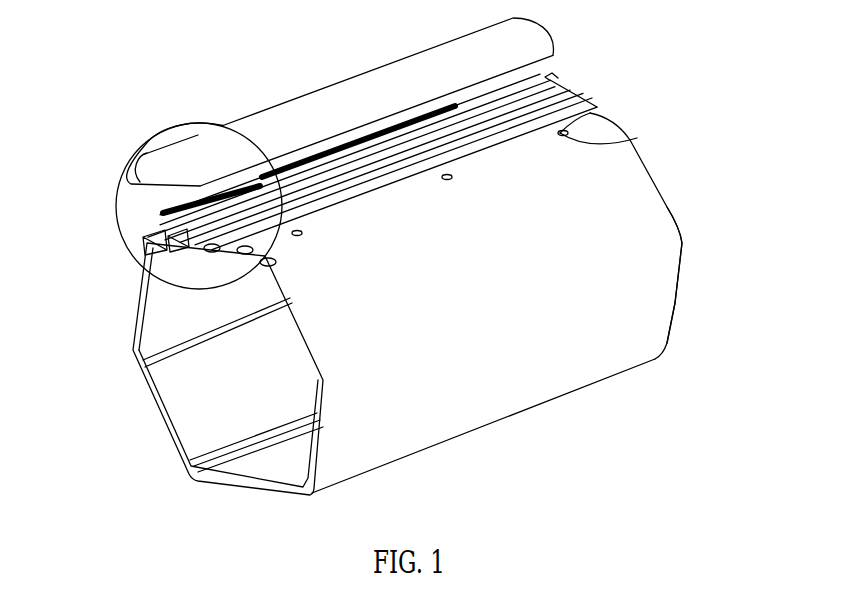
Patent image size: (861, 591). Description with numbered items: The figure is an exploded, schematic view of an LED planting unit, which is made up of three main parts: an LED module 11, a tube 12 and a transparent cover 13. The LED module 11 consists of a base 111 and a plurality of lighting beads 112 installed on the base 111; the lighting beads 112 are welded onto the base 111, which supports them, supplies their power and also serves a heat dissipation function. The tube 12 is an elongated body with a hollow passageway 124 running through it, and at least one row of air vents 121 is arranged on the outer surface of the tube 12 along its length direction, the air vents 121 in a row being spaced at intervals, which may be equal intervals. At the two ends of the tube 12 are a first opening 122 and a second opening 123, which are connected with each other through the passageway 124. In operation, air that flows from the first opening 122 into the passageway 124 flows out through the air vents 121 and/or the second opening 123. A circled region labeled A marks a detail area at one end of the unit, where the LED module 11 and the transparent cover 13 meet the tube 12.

The LED module 11 is at (552, 79).
The base 111 is at (552, 84).
The lighting beads 112 is at (322, 153).
The tube 12 is at (660, 242).
The air vents 121 is at (637, 138).
The first opening 122 is at (163, 322).
The second opening 123 is at (683, 278).
The hollow passageway 124 is at (183, 417).
The transparent cover 13 is at (367, 82).
The detail region A is at (200, 122).